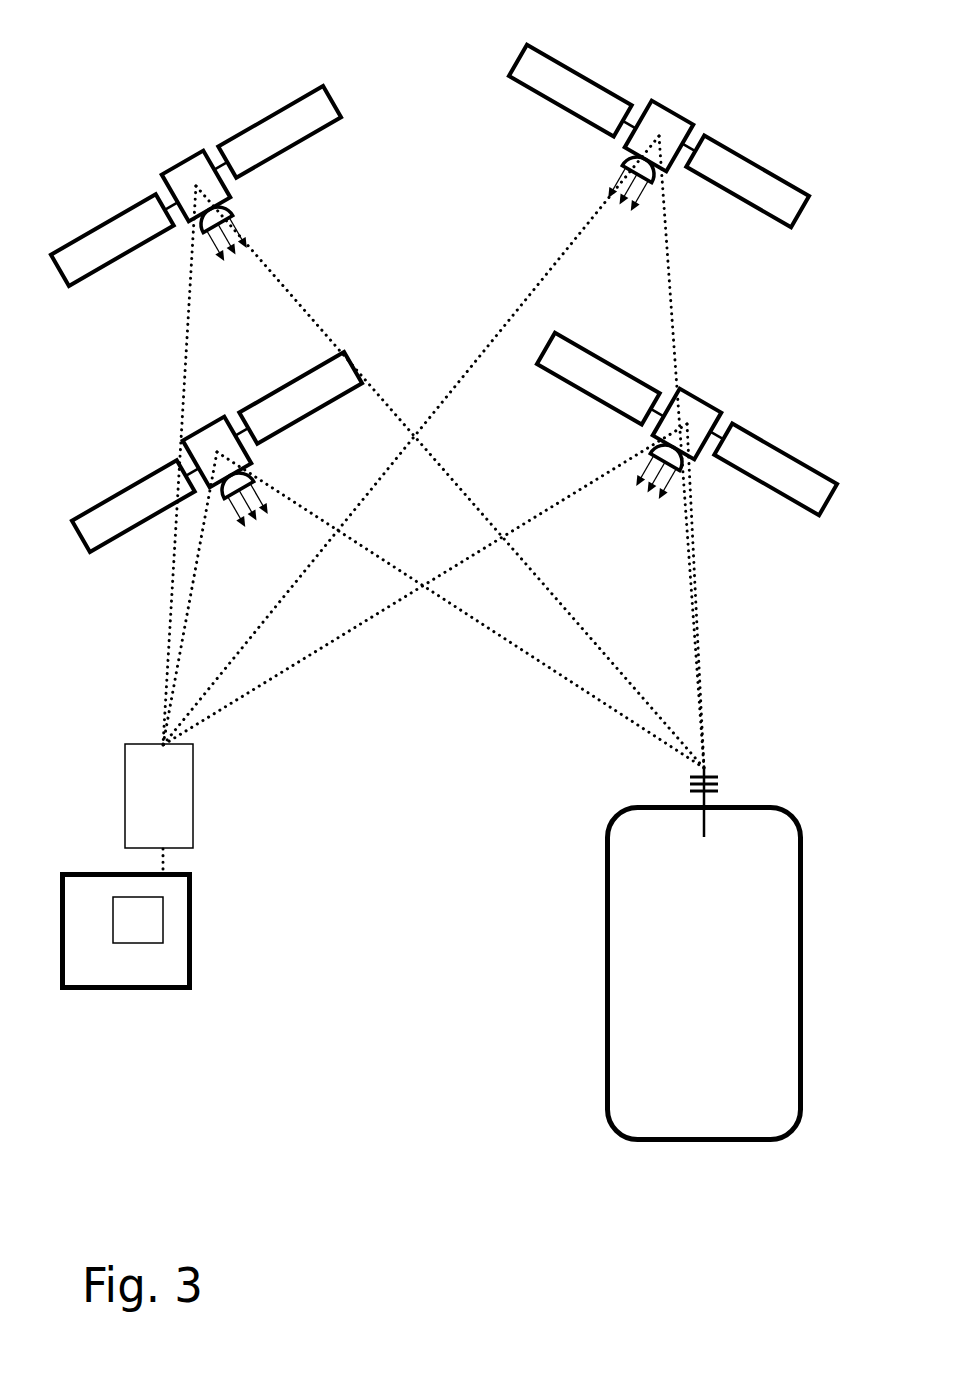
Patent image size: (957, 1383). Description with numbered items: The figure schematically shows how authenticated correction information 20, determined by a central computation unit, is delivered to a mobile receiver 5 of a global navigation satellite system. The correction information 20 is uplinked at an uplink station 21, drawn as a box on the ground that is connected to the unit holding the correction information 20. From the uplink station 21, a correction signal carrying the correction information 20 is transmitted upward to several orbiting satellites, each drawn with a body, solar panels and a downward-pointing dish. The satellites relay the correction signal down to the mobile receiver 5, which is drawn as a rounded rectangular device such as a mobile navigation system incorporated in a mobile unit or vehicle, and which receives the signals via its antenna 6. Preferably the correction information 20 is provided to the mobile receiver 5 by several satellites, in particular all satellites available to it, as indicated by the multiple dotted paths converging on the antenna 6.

The uplink station 21 is at (175, 805).
The correction information 20 is at (126, 931).
The mobile receiver 5 is at (790, 860).
The antenna 6 is at (717, 775).